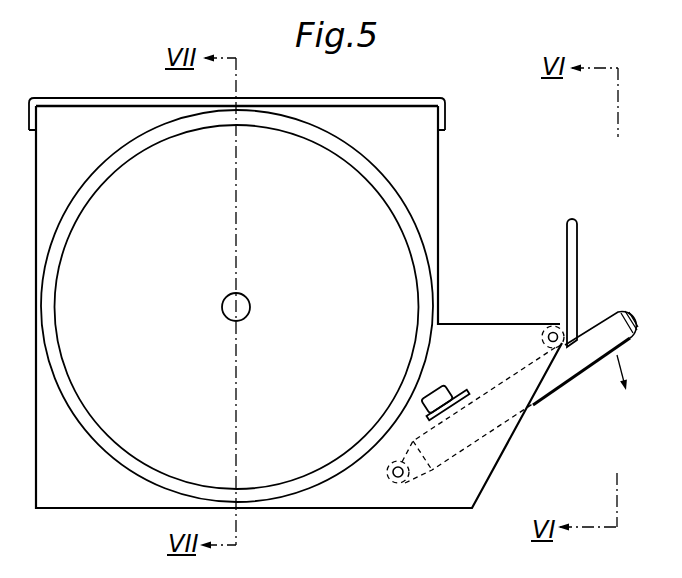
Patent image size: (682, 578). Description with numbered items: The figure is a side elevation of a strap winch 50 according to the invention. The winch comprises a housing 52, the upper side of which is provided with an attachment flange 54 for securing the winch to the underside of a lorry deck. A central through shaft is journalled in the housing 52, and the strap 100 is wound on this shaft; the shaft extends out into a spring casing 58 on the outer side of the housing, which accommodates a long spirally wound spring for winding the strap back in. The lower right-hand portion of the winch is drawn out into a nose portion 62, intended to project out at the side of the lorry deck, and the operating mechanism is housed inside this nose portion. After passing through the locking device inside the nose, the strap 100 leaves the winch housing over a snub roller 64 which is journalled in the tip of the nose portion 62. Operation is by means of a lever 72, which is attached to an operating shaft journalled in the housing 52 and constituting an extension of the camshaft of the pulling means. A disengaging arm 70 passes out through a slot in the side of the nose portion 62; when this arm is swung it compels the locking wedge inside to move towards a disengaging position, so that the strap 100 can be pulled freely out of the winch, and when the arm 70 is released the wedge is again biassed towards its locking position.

The record player apparatus 50 is at (490, 173).
The housing 52 is at (417, 189).
The attachment flange 54 is at (445, 112).
The spring casing 58 is at (397, 277).
The nose portion 62 is at (483, 463).
The snub roller 64 is at (563, 330).
The disengaging arm 70 is at (441, 402).
The lever 72 is at (579, 356).
The strap 100 is at (577, 233).